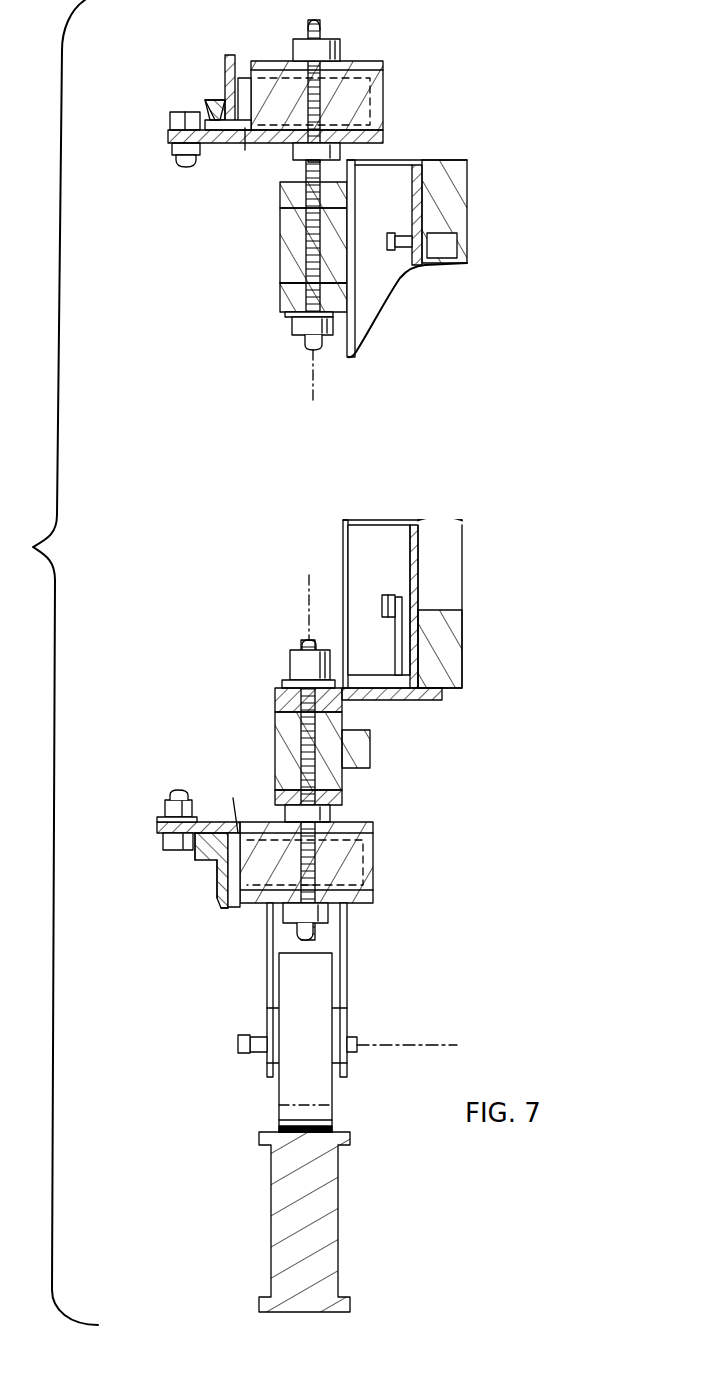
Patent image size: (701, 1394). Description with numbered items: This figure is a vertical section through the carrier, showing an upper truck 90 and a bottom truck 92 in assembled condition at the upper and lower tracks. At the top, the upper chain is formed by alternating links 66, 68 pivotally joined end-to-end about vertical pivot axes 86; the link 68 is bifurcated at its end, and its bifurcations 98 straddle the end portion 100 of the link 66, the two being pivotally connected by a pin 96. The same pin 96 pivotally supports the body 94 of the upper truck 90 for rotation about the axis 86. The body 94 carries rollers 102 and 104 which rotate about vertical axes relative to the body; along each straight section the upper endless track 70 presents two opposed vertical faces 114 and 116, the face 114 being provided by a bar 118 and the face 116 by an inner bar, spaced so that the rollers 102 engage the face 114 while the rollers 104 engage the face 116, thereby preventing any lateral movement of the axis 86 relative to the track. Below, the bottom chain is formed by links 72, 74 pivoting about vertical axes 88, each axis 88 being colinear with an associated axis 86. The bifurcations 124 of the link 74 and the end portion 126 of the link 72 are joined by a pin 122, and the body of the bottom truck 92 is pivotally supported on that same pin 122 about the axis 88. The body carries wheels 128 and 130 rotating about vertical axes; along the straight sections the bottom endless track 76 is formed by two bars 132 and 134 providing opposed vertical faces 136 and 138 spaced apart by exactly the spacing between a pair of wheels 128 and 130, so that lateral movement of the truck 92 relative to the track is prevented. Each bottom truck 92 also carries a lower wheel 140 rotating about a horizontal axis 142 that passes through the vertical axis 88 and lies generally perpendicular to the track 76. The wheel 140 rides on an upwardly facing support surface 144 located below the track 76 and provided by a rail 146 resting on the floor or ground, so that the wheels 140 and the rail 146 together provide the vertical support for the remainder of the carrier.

The upper link 66 is at (287, 257).
The upper link 68 is at (287, 290).
The upper endless track 70 is at (227, 56).
The bottom link 72 is at (275, 722).
The bottom link 74 is at (342, 797).
The bottom endless track 76 is at (223, 909).
The vertical pivot axis 86 is at (310, 361).
The vertical pivot axis 88 is at (308, 597).
The upper truck 90 is at (367, 62).
The bottom truck 92 is at (373, 824).
The body 94 is at (383, 136).
The pin 96 is at (306, 174).
The bifurcations 98 is at (287, 193).
The end portion 100 is at (285, 233).
The roller 102 is at (244, 78).
The roller 104 is at (170, 119).
The vertical face 114 is at (243, 152).
The vertical face 116 is at (207, 107).
The bar 118 is at (222, 64).
The pin 122 is at (315, 768).
The bifurcations 124 is at (278, 698).
The end portion 126 is at (275, 738).
The wheel 128 is at (240, 907).
The wheel 130 is at (163, 838).
The bar 132 is at (217, 876).
The bar 134 is at (205, 862).
The vertical face 136 is at (230, 807).
The vertical face 138 is at (195, 848).
The lower wheel 140 is at (332, 1092).
The axis 142 is at (433, 1040).
The support surface 144 is at (278, 1132).
The rail 146 is at (325, 1213).